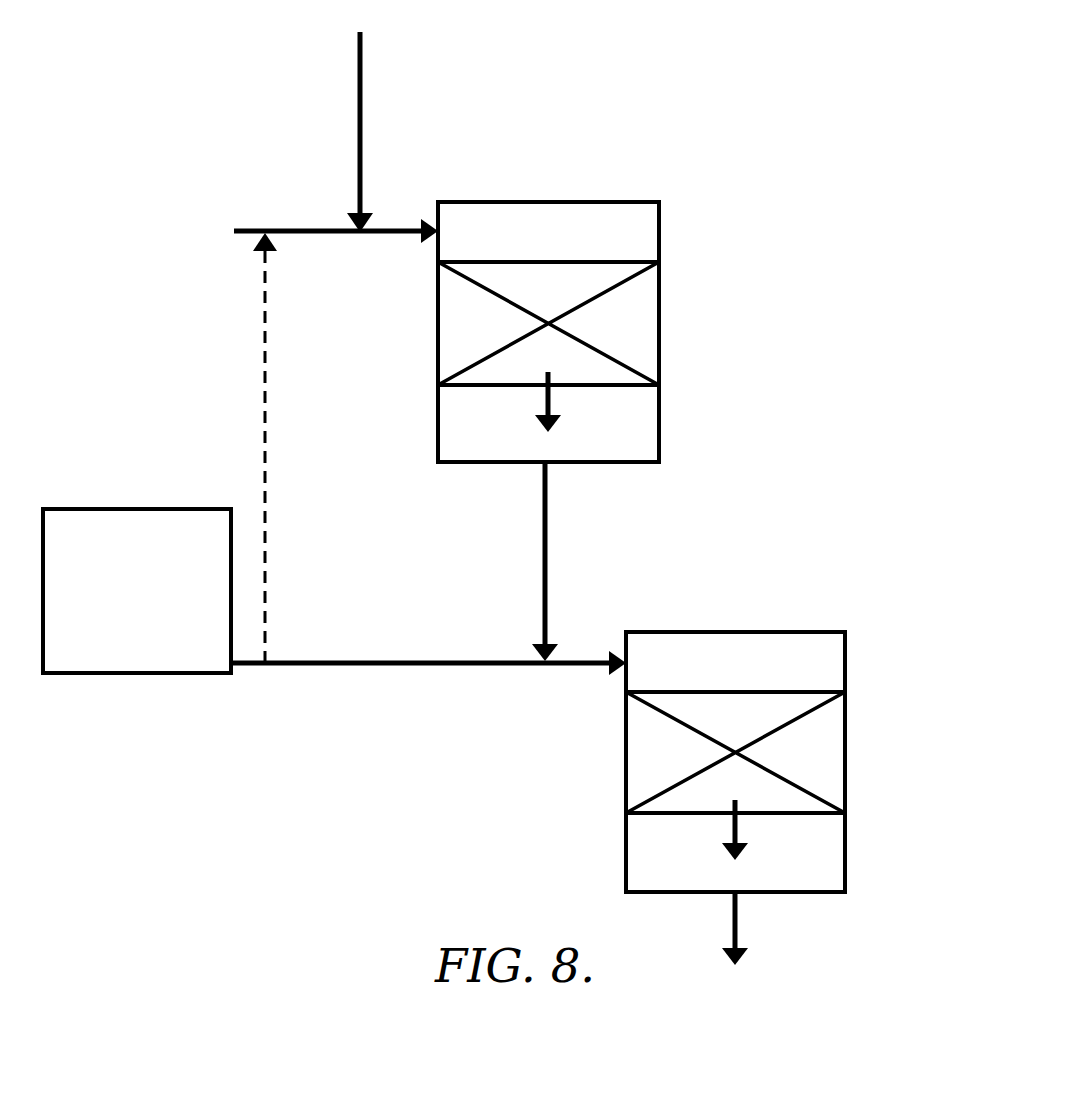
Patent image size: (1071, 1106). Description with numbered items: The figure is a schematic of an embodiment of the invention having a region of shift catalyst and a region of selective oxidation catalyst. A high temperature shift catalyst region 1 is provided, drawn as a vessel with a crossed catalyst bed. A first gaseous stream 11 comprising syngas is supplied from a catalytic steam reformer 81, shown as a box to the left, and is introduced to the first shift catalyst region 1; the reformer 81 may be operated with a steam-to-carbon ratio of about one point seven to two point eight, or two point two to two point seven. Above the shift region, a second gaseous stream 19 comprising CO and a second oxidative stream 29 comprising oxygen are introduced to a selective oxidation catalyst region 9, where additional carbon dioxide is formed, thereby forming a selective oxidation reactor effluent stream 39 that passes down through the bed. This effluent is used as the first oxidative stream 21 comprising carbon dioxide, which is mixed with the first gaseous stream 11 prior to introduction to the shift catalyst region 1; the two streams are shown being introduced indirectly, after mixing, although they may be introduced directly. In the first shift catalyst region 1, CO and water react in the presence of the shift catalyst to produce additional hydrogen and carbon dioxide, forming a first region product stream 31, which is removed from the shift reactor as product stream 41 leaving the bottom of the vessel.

The second oxidative stream 29 is at (360, 138).
The second gaseous stream 19 is at (297, 233).
The selective oxidation catalyst region 9 is at (643, 340).
The selective oxidation reactor effluent stream 39 is at (550, 402).
The first oxidative stream 21 is at (548, 570).
The catalytic steam reformer 81 is at (155, 618).
The first gaseous stream 11 is at (482, 665).
The high temperature shift catalyst region 1 is at (830, 768).
The first region product stream 31 is at (738, 830).
The product stream 41 is at (738, 920).